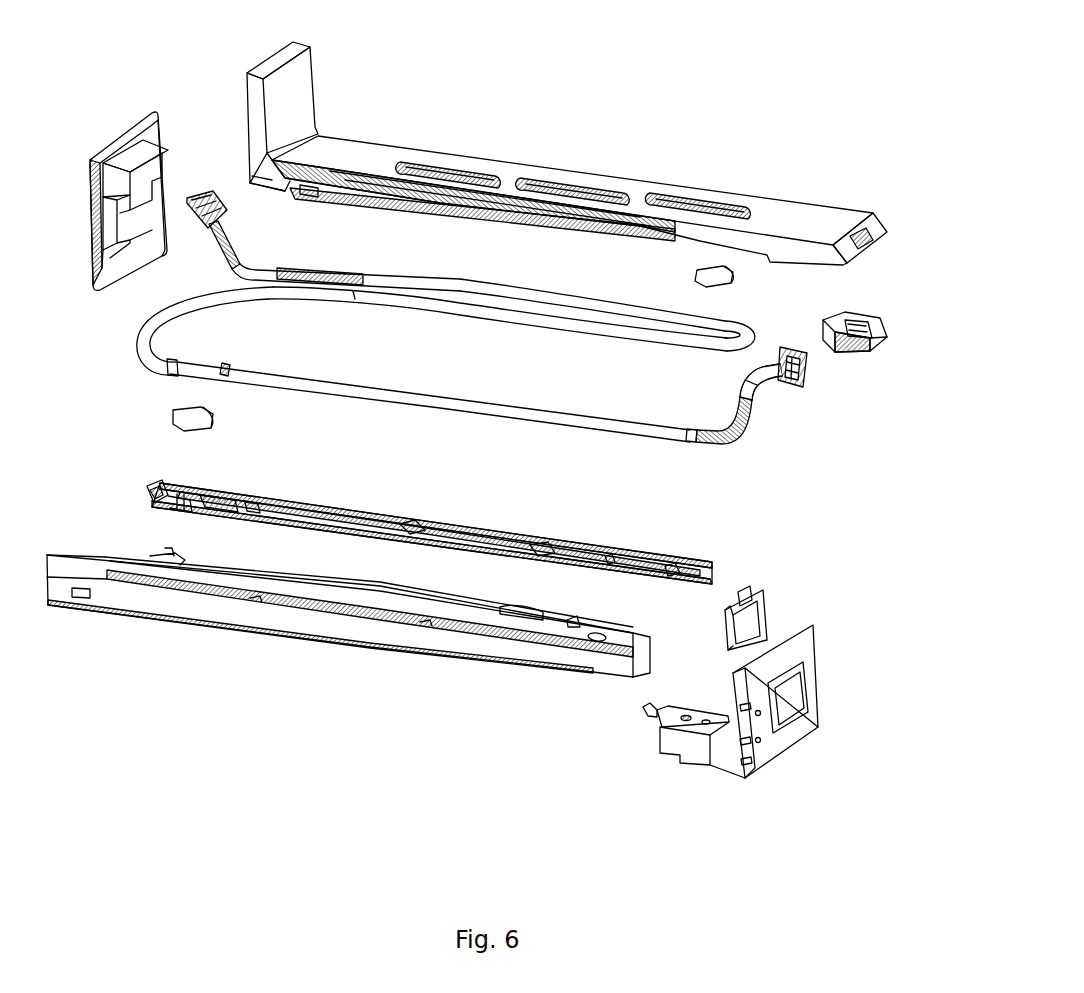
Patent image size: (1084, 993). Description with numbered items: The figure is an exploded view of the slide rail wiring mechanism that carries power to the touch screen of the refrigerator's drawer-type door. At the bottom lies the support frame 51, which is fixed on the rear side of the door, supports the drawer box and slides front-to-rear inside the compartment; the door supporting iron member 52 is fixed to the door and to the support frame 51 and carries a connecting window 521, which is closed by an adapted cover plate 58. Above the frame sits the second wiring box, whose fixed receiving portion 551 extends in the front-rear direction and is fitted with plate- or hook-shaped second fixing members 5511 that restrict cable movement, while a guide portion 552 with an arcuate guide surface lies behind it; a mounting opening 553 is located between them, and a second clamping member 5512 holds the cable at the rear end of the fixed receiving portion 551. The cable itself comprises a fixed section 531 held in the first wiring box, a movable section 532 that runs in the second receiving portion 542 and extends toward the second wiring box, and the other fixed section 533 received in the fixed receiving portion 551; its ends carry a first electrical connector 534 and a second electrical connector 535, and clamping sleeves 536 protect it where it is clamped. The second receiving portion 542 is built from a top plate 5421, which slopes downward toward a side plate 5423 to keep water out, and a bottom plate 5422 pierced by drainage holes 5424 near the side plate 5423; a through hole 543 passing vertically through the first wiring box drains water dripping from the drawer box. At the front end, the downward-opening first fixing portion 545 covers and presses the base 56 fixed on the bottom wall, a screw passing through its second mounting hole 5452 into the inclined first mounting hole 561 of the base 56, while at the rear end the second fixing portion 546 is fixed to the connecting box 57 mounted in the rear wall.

The support frame 51 is at (377, 645).
The door supporting iron member 52 is at (666, 757).
The connecting window 521 is at (783, 723).
The fixed section 531 is at (540, 291).
The movable section 532 is at (137, 327).
The other fixed section 533 is at (450, 393).
The first electrical connector 534 is at (197, 194).
The second electrical connector 535 is at (787, 390).
The clamping sleeve 536 is at (697, 277).
The second receiving portion 542 is at (388, 178).
The through hole 543 is at (453, 166).
The top plate 5421 is at (633, 213).
The bottom plate 5422 is at (618, 252).
The side plate 5423 is at (314, 196).
The drainage holes 5424 is at (508, 212).
The first fixing portion 545 is at (827, 218).
The second mounting hole 5452 is at (873, 249).
The second fixing portion 546 is at (278, 58).
The fixed receiving portion 551 is at (540, 563).
The second fixing members 5511 is at (433, 523).
The second clamping member 5512 is at (223, 493).
The guide portion 552 is at (157, 480).
The mounting opening 553 is at (190, 515).
The base 56 is at (853, 317).
The first mounting hole 561 is at (887, 340).
The connecting box 57 is at (112, 147).
The cover plate 58 is at (750, 588).